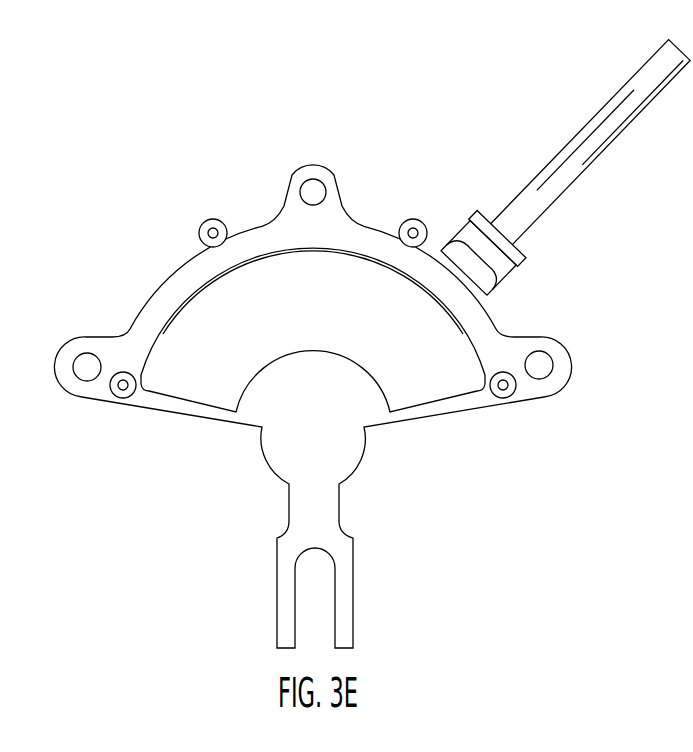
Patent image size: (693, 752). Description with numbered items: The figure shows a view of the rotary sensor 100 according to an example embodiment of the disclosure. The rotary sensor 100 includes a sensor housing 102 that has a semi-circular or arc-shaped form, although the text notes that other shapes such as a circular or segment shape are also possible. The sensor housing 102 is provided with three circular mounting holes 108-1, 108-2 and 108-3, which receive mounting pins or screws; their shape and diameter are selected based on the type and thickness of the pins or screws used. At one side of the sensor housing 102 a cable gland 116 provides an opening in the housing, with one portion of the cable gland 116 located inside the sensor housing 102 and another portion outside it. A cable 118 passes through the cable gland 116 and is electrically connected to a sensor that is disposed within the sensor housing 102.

The rotary sensor 100 is at (184, 151).
The sensor housing 102 is at (158, 287).
The mounting hole 108-1 is at (85, 367).
The mounting hole 108-2 is at (309, 186).
The mounting hole 108-3 is at (543, 363).
The cable gland 116 is at (476, 223).
The cable 118 is at (545, 168).